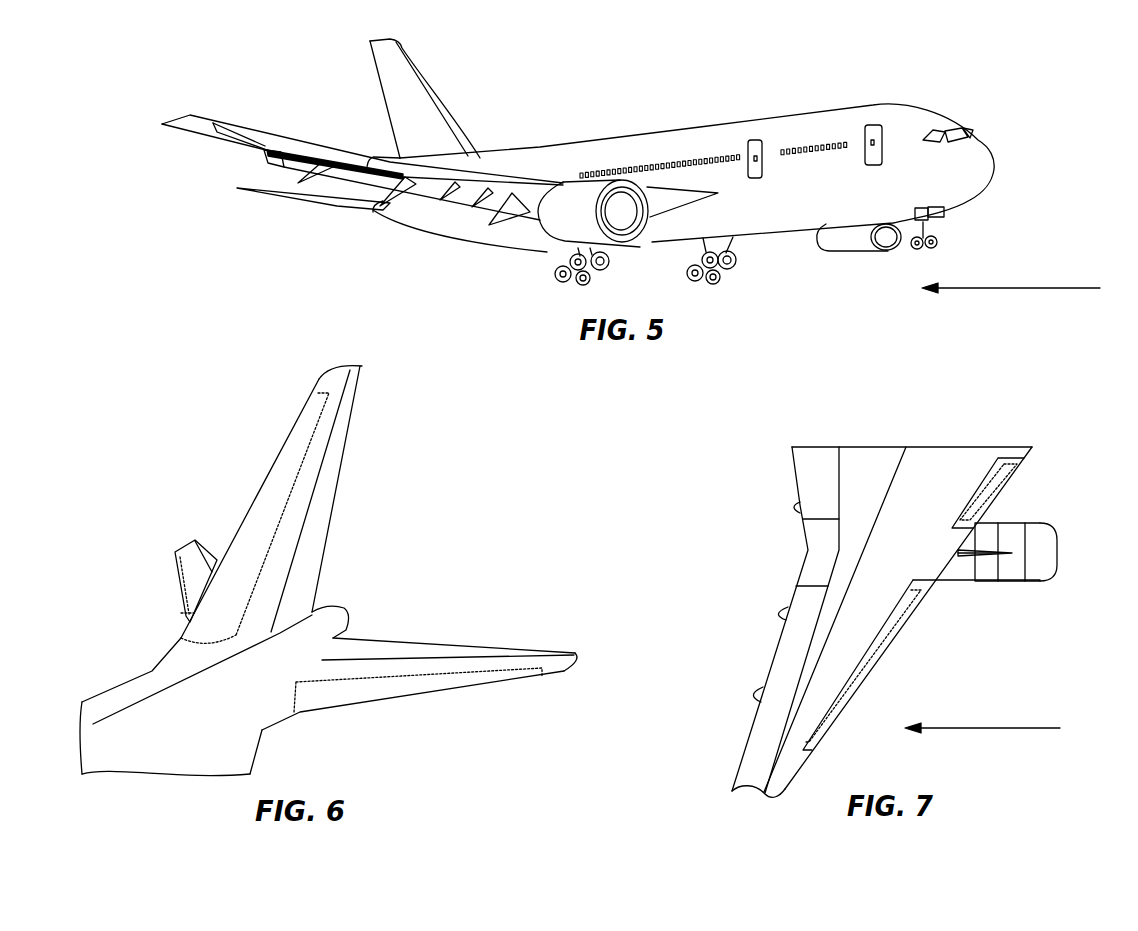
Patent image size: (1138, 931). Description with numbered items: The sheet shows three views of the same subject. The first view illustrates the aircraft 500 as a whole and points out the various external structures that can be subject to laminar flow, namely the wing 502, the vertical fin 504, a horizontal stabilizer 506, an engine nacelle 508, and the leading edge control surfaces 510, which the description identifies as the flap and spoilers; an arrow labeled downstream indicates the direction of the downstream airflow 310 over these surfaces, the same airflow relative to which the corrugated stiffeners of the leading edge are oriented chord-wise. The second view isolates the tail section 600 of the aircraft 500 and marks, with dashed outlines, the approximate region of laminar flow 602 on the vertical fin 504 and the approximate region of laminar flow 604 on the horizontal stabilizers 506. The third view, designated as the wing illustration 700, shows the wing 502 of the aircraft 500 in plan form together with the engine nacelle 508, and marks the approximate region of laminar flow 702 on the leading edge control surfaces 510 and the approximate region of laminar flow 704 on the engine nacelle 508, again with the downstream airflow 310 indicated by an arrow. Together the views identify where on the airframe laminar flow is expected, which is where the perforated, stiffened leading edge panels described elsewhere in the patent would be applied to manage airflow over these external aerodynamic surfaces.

In FIG. 5, the aircraft 500 is at (999, 74).
In FIG. 5, the wing 502 is at (352, 133).
In FIG. 7, the wing 502 is at (943, 463).
In FIG. 5, the vertical fin 504 is at (413, 102).
In FIG. 6, the vertical fin 504 is at (293, 505).
In FIG. 5, the horizontal stabilizer 506 is at (318, 198).
In FIG. 6, the horizontal stabilizer 506 is at (340, 632).
In FIG. 5, the engine nacelle 508 is at (615, 177).
In FIG. 7, the engine nacelle 508 is at (1043, 590).
In FIG. 5, the leading edge control surfaces 510 is at (273, 132).
In FIG. 7, the leading edge control surfaces 510 is at (949, 589).
In FIG. 5, the downstream airflow 310 is at (1010, 292).
In FIG. 7, the downstream airflow 310 is at (998, 733).
In FIG. 6, the tail section 600 is at (152, 441).
In FIG. 6, the region of laminar flow 602 is at (278, 470).
In FIG. 6, the region of laminar flow 604 is at (344, 697).
In FIG. 7, the wing 700 is at (740, 497).
In FIG. 7, the region of laminar flow 702 is at (993, 485).
In FIG. 7, the region of laminar flow 704 is at (1052, 560).